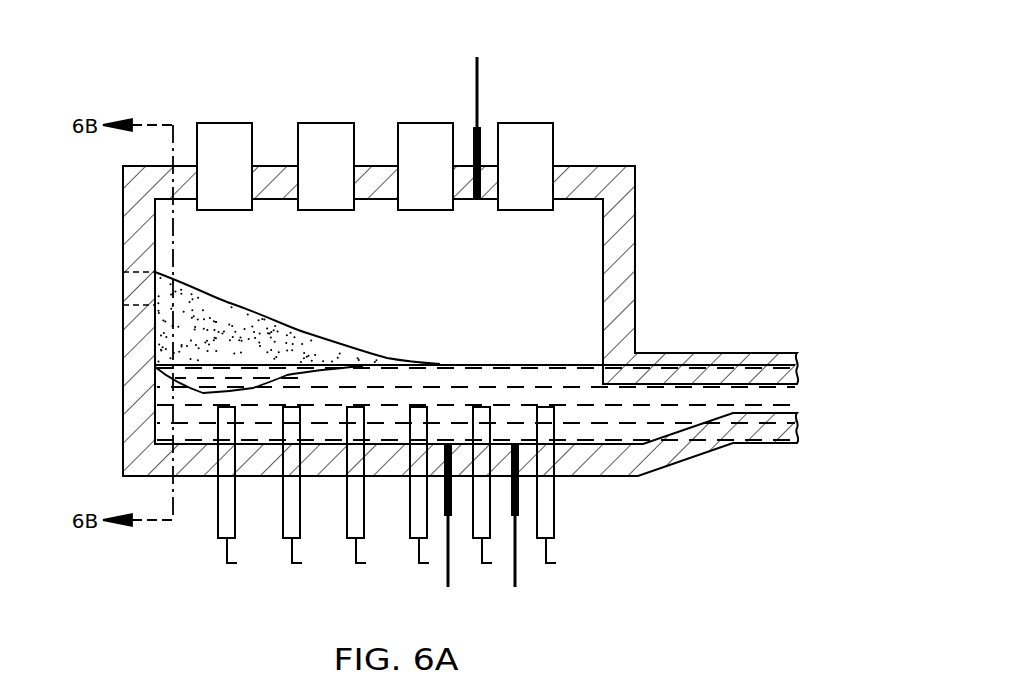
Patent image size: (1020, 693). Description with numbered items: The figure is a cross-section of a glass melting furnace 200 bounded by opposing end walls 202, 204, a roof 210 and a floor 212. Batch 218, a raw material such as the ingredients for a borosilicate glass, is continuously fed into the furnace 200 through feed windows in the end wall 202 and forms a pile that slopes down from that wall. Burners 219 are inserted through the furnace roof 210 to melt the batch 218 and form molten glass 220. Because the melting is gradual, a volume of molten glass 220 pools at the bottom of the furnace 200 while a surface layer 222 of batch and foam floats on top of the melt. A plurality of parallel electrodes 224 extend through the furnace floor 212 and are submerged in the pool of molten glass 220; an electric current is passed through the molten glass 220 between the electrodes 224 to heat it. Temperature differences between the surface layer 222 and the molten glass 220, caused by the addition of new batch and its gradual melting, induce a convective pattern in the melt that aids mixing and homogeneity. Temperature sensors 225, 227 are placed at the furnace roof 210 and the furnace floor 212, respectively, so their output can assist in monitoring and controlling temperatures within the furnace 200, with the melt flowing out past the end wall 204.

The glass melting furnace 200 is at (435, 84).
The end wall 202 is at (127, 216).
The end wall 204 is at (627, 215).
The roof 210 is at (373, 165).
The floor 212 is at (375, 478).
The batch 218 is at (194, 307).
The burners 219 is at (226, 123).
The molten glass 220 is at (618, 435).
The surface layer 222 is at (312, 335).
The electrodes 224 is at (235, 523).
The temperature sensor 225 is at (478, 73).
The temperature sensor 227 is at (450, 572).